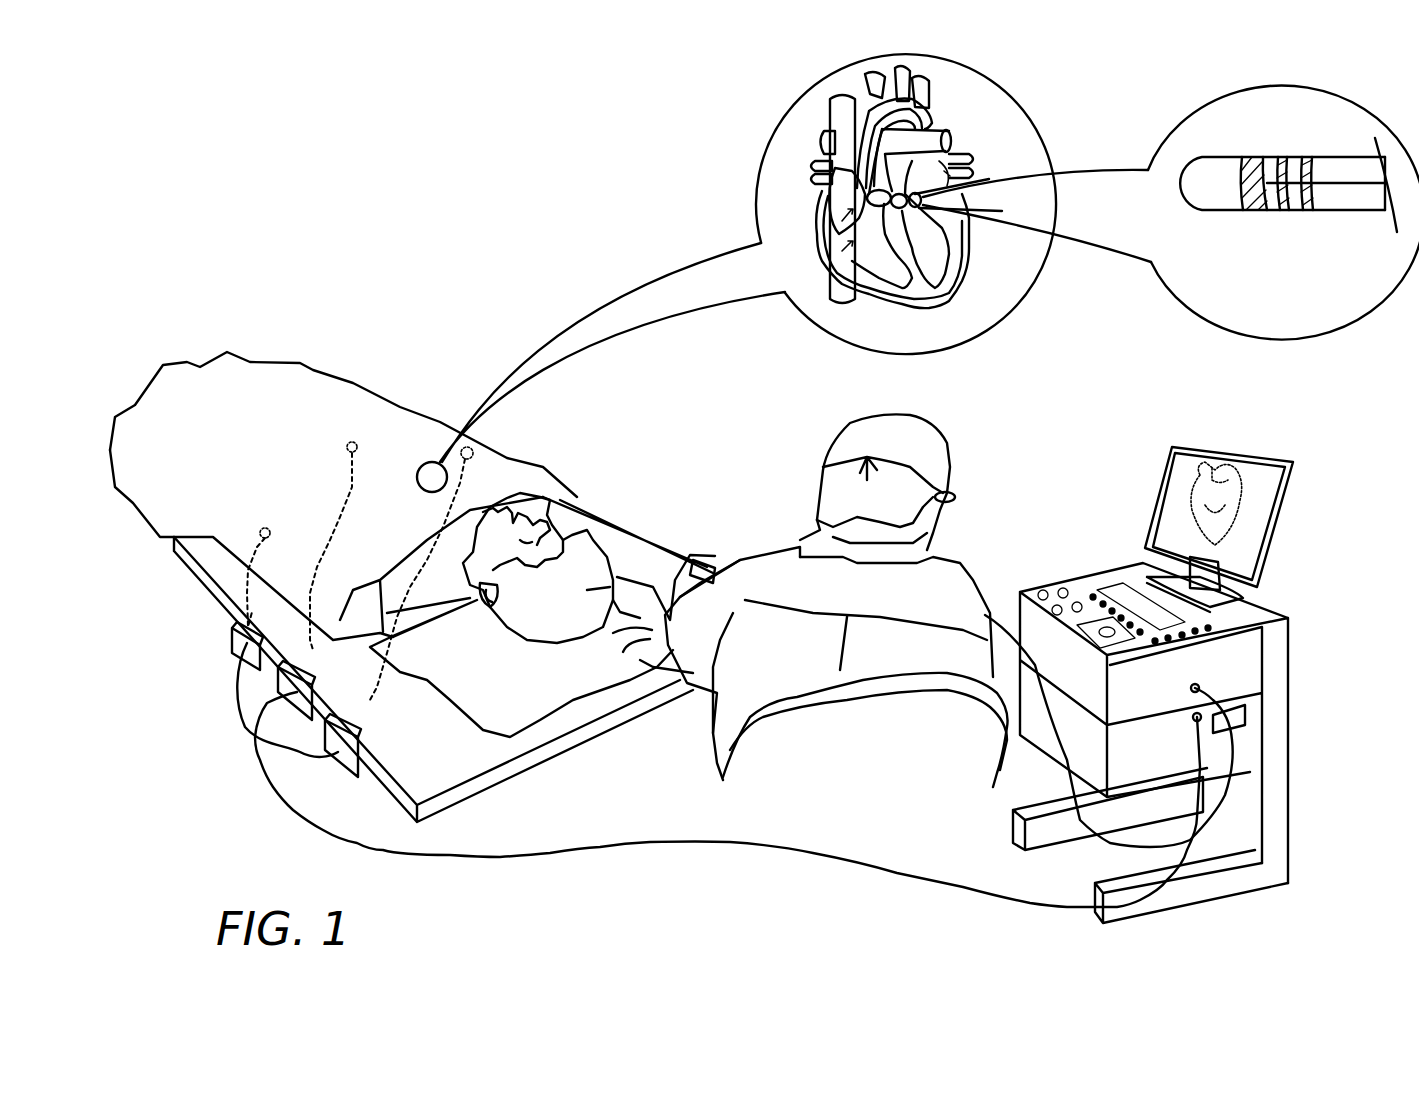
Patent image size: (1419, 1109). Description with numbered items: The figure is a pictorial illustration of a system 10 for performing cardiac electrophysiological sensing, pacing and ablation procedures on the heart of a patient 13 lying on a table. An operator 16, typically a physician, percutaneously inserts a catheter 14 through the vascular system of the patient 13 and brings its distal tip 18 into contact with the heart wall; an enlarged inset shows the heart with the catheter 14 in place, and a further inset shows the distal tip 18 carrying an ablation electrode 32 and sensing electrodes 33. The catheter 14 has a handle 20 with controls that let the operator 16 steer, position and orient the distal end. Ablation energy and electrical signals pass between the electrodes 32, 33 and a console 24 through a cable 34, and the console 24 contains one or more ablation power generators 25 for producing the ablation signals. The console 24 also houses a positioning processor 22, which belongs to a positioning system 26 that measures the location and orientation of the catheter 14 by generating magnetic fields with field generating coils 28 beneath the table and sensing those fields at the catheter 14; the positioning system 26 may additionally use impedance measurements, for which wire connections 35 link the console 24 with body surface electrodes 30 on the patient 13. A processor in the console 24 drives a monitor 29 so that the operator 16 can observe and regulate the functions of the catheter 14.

The system 10 is at (470, 225).
The patient 13 is at (423, 590).
The catheter 14 is at (625, 530).
The operator 16 is at (752, 552).
The distal tip 18 is at (1225, 212).
The handle 20 is at (696, 556).
The positioning processor 22 is at (1255, 752).
The console 24 is at (1305, 602).
The ablation power generators 25 is at (1255, 645).
The positioning system 26 is at (618, 853).
The field generating coils 28 is at (347, 770).
The monitor 29 is at (1290, 490).
The body surface electrodes 30 is at (347, 448).
The ablation electrode 32 is at (1252, 157).
The sensing electrodes 33 is at (1305, 157).
The cable 34 is at (1368, 195).
The wire connections 35 is at (248, 561).